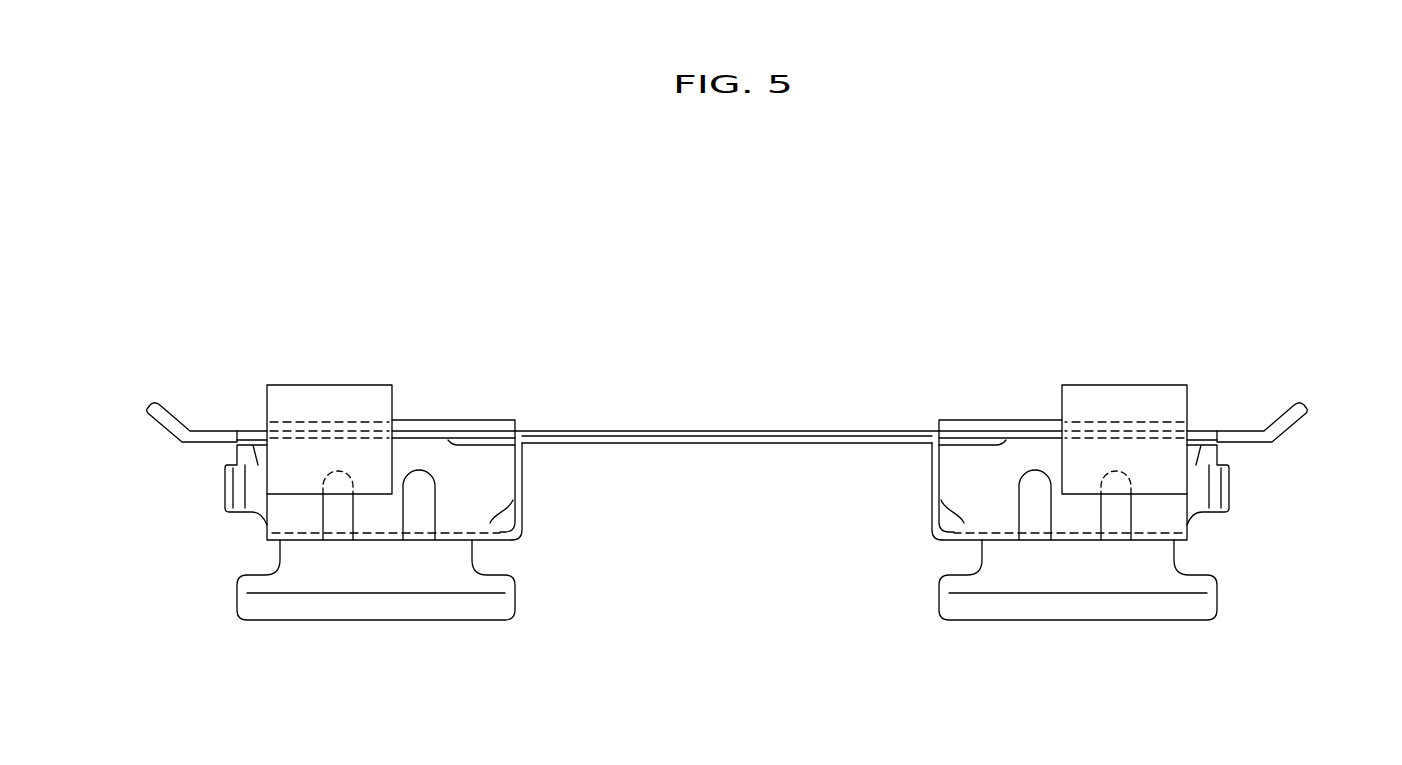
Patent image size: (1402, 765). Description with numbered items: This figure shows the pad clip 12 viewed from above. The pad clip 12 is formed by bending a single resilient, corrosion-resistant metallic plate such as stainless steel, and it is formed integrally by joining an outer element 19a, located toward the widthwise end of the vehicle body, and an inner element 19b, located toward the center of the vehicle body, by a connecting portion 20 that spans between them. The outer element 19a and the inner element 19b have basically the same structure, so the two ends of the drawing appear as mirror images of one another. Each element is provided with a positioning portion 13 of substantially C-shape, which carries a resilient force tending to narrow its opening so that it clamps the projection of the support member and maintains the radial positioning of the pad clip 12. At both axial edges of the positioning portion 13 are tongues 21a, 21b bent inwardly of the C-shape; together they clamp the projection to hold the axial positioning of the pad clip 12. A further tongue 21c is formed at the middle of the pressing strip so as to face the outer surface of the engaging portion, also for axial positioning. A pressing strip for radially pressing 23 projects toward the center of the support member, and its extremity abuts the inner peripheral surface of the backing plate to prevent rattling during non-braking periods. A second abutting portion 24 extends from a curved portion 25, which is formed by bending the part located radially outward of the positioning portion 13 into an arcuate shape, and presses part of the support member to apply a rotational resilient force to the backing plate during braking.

The pad clip 12 is at (726, 494).
The positioning portion 13 is at (486, 495).
The outer element 19a is at (1001, 447).
The inner element 19b is at (423, 457).
The connecting portion 20 is at (775, 430).
The tongue 21a is at (243, 487).
The tongue 21b is at (523, 464).
The tongue 21c is at (165, 424).
The pressing strip for radially pressing 23 is at (430, 608).
The second abutting portion 24 is at (315, 405).
The curved portion 25 is at (303, 486).